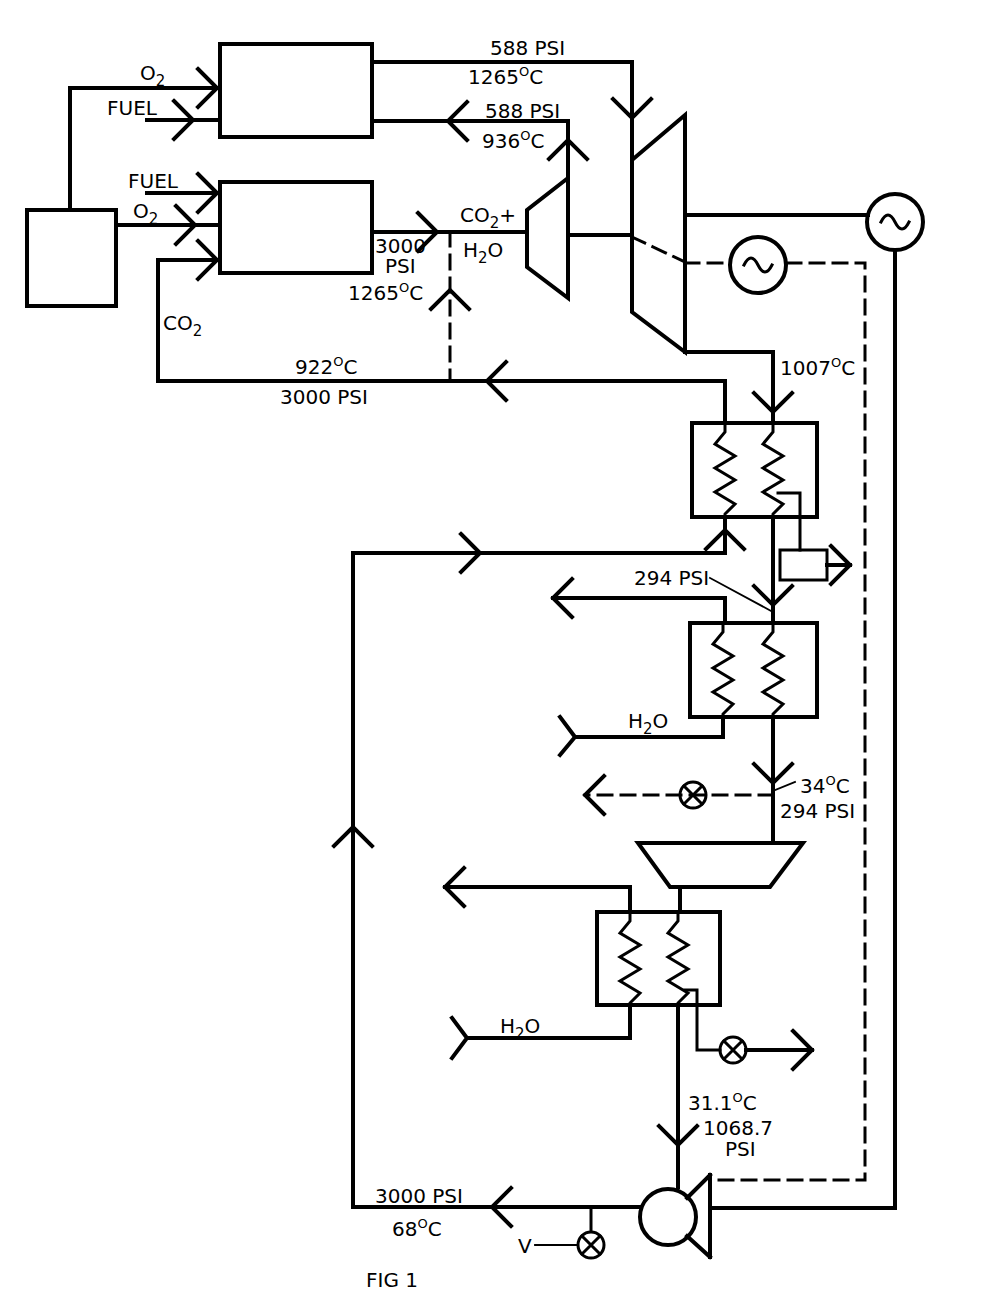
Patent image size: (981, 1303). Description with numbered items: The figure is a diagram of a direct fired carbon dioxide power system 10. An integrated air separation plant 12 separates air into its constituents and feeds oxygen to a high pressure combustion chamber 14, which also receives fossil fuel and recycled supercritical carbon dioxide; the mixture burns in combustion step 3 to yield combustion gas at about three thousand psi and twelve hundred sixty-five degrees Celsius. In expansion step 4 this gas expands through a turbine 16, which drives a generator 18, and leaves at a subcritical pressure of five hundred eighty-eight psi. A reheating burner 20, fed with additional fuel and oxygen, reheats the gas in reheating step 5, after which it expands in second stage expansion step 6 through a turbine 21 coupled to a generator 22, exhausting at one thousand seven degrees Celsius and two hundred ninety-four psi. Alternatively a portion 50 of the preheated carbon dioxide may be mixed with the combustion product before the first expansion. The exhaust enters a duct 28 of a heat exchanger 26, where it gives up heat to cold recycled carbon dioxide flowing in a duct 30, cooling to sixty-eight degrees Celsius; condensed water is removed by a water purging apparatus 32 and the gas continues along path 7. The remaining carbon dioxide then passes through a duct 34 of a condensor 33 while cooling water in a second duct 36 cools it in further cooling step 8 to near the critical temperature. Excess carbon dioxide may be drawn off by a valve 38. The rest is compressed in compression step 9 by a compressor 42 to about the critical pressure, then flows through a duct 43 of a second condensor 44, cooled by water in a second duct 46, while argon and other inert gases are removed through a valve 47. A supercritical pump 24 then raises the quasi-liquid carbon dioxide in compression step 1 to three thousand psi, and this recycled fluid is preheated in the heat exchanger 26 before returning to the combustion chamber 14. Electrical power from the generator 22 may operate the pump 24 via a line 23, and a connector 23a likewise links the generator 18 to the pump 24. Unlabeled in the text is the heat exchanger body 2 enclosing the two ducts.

The carbon dioxide power system 10 is at (84, 70).
The integrated air separation plant 12 is at (71, 258).
The reheating burner 20 is at (296, 90).
The combustion chamber 14 is at (296, 227).
The reheating step 5 is at (375, 58).
The first turbine expansion step 4 is at (568, 173).
The turbine 16 is at (547, 238).
The combustion step 3 is at (375, 230).
The portion of preheated carbon dioxide 50 is at (450, 322).
The turbine 21 is at (718, 233).
The generator 22 is at (882, 196).
The generator 18 is at (776, 291).
The second stage expansion step 6 is at (692, 351).
The recuperative heat exchanger 2 is at (715, 420).
The heat exchanger 26 is at (690, 463).
The duct 30 is at (725, 472).
The duct 28 is at (777, 440).
The conduit from heat exchanger to cooler 7 is at (770, 520).
The water purging apparatus 32 is at (814, 538).
The condensor 33 is at (688, 678).
The second duct 36 is at (723, 698).
The duct 34 is at (777, 690).
The further cooling step 8 is at (775, 718).
The valve 38 is at (680, 807).
The compressor 42 is at (720, 865).
The compression step 9 is at (686, 890).
The second condensor 44 is at (722, 977).
The duct 43 is at (688, 958).
The second duct 46 is at (628, 968).
The valve 47 is at (742, 1062).
The supercritical pump 24 is at (675, 1216).
The compression step 1 is at (640, 1206).
The line 23 is at (893, 866).
The connector 23a is at (866, 812).